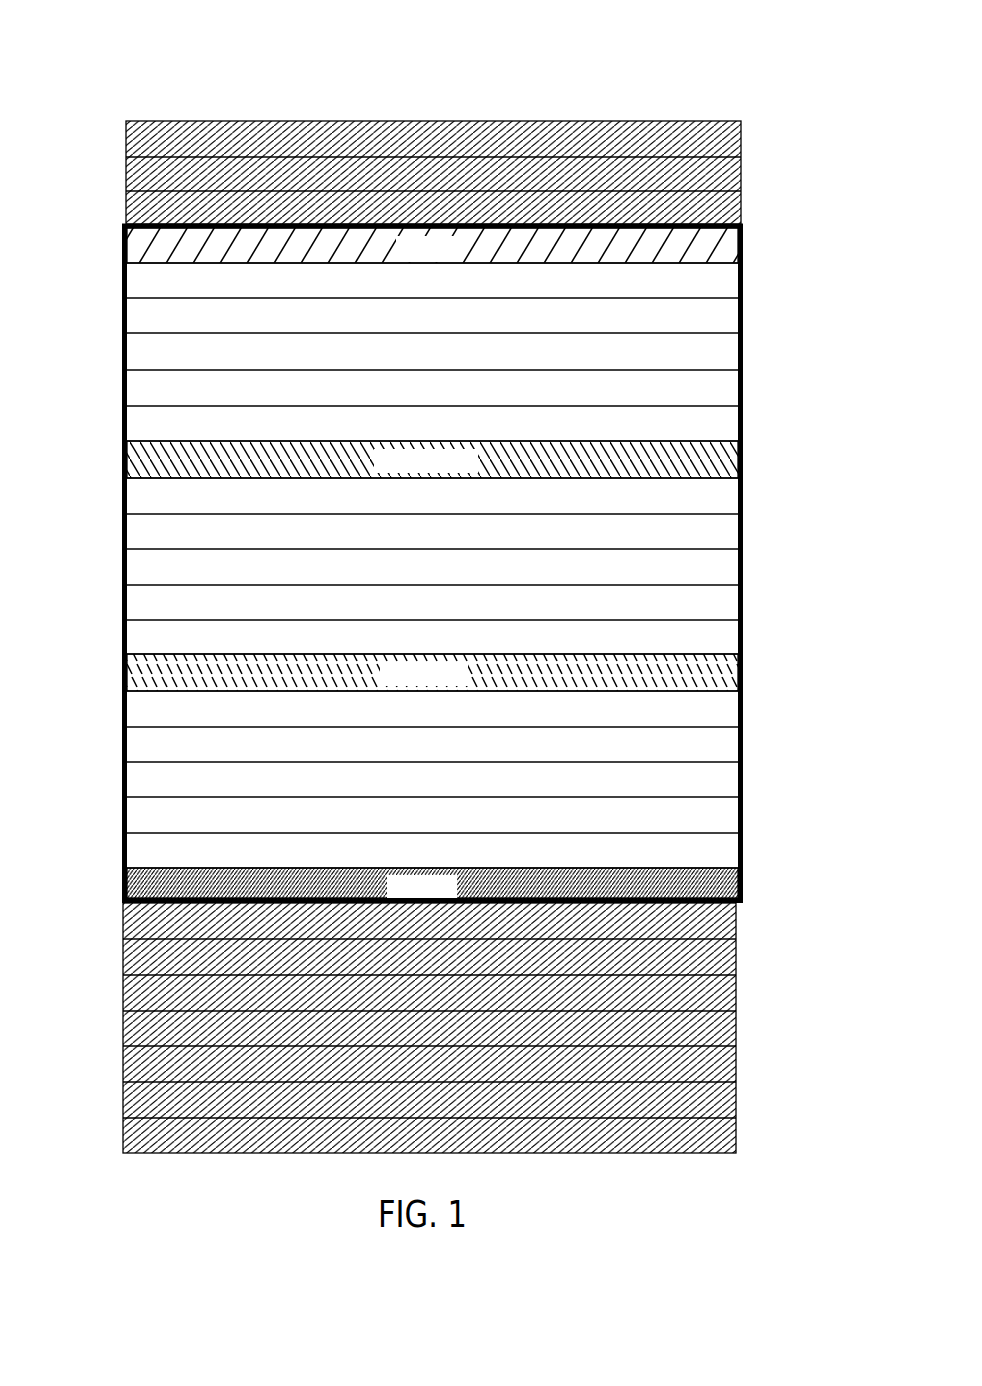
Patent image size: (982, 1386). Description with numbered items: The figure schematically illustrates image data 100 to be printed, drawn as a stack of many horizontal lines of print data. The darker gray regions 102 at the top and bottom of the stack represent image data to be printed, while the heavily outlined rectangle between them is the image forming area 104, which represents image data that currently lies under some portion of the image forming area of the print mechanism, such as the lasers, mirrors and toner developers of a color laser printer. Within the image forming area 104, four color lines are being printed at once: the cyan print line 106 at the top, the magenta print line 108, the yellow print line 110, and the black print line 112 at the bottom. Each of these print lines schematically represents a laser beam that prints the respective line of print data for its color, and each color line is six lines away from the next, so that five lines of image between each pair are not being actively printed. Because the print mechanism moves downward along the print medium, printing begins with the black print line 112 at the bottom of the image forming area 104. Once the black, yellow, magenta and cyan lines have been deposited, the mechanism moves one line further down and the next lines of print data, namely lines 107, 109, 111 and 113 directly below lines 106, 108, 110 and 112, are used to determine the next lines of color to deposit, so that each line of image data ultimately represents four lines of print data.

The image data 100 is at (119, 93).
The darker gray regions 102 is at (303, 140).
The image forming area 104 is at (122, 353).
The cyan print line 106 is at (716, 238).
The line below cyan line 107 is at (724, 284).
The magenta print line 108 is at (710, 463).
The line below magenta line 109 is at (732, 495).
The yellow print line 110 is at (713, 675).
The line below yellow line 111 is at (732, 705).
The black print line 112 is at (737, 886).
The line below black line 113 is at (737, 920).